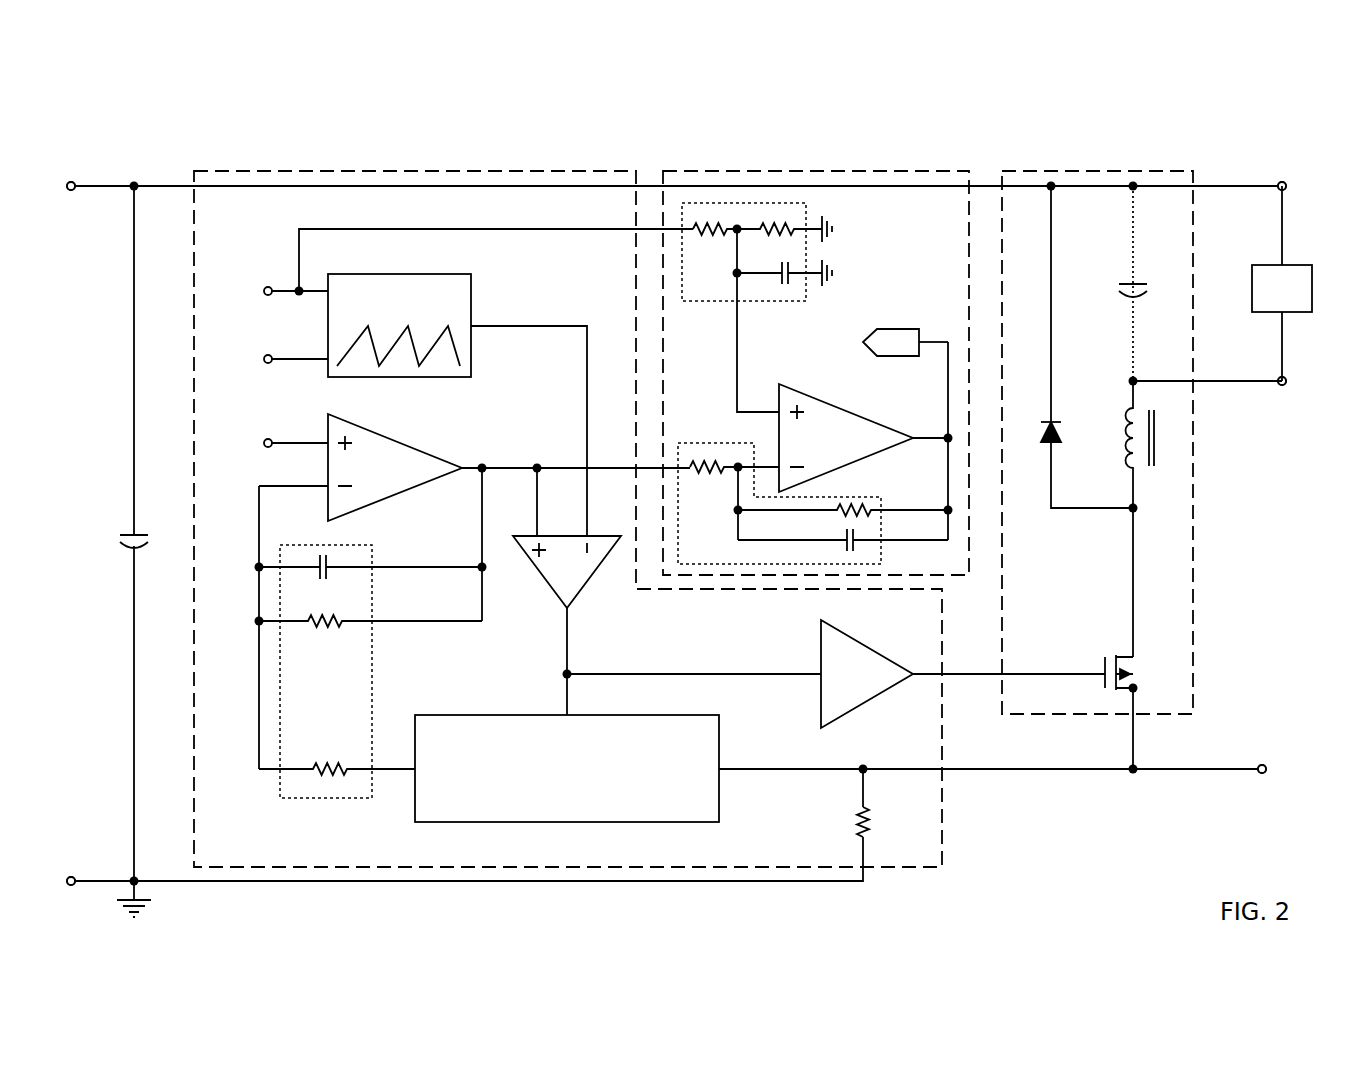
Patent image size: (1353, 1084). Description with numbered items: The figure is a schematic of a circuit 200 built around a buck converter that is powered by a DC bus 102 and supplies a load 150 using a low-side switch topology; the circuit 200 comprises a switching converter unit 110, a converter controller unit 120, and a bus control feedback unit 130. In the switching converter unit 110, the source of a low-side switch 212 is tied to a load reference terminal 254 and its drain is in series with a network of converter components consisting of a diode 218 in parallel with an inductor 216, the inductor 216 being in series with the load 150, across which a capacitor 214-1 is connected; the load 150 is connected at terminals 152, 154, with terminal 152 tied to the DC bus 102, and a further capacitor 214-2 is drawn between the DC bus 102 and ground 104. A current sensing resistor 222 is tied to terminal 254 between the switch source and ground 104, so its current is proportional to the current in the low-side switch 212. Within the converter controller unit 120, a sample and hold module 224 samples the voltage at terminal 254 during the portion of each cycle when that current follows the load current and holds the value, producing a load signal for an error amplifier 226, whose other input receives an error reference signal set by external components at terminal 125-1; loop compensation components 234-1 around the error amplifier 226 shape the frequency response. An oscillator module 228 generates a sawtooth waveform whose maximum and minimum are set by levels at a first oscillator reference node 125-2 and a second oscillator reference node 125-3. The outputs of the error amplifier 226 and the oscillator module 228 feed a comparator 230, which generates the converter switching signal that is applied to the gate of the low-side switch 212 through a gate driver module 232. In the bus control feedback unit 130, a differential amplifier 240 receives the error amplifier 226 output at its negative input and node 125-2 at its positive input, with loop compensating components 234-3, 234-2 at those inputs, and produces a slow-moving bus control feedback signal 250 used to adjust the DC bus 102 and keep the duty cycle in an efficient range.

The DC bus 102 is at (71, 183).
The ground 104 is at (71, 878).
The switching converter unit 110 is at (1047, 170).
The converter controller unit 120 is at (268, 170).
The bus control feedback unit 130 is at (701, 170).
The load 150 is at (1307, 265).
The output terminal 152 is at (1278, 183).
The output terminal 154 is at (1281, 385).
The circuit 200 is at (594, 150).
The low-side switch 212 is at (1119, 655).
The capacitor 214-1 is at (1122, 283).
The input capacitor 214-2 is at (125, 536).
The inductor 216 is at (1137, 465).
The diode 218 is at (1060, 423).
The current sensing resistor 222 is at (855, 819).
The sample and hold module 224 is at (444, 715).
The error amplifier 226 is at (444, 462).
The oscillator module 228 is at (387, 273).
The comparator 230 is at (542, 575).
The gate driver module 232 is at (864, 704).
The loop compensation components 234-1 is at (374, 554).
The loop compensating components 234-2 is at (718, 440).
The loop compensating components 234-3 is at (718, 301).
The differential amplifier 240 is at (828, 402).
The bus control feedback signal 250 is at (895, 327).
The load reference terminal 254 is at (1264, 766).
The terminal 125-1 is at (264, 440).
The first oscillator reference node 125-2 is at (264, 288).
The second oscillator reference node 125-3 is at (264, 356).